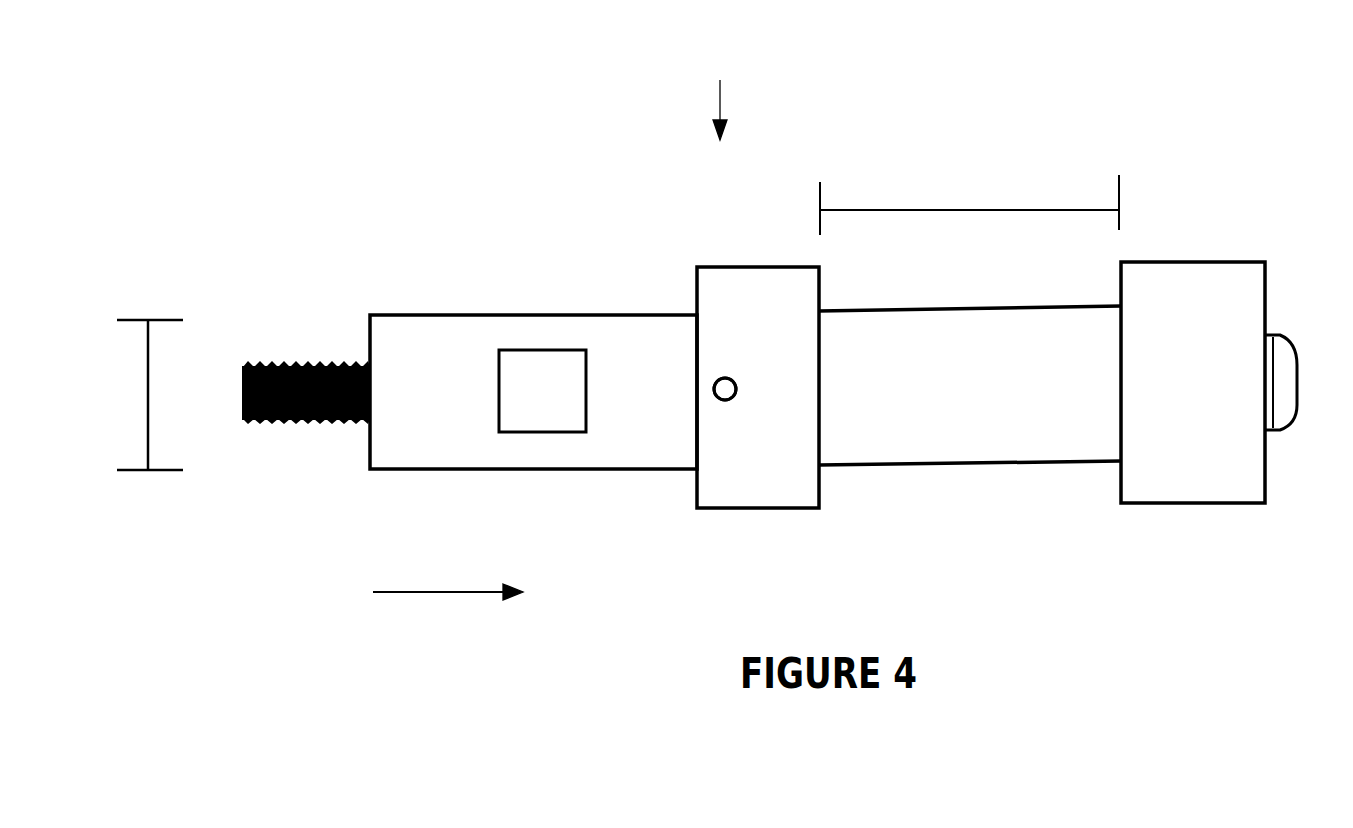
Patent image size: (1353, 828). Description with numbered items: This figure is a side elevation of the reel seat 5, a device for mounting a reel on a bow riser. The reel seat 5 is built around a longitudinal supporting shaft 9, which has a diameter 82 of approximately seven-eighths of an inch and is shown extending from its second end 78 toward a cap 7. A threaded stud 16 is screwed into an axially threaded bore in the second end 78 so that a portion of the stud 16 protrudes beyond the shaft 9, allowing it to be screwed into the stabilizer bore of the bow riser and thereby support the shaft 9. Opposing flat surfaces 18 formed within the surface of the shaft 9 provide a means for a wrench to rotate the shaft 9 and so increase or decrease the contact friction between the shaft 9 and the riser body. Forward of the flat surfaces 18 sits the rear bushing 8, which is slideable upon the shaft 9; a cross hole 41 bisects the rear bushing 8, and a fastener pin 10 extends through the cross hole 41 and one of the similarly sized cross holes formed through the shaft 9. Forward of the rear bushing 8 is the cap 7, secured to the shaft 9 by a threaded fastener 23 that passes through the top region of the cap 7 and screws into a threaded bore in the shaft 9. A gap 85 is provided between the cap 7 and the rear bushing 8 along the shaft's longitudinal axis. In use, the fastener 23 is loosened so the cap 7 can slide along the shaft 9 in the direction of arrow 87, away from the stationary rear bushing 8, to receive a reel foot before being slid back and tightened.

The reel seat 5 is at (720, 87).
The cap 7 is at (1185, 410).
The rear bushing 8 is at (745, 355).
The longitudinal supporting shaft 9 is at (955, 417).
The fastener pin 10 is at (725, 400).
The threaded stud 16 is at (272, 362).
The flat surfaces 18 is at (523, 375).
The threaded fastener 23 is at (1285, 360).
The cross hole 41 is at (715, 379).
The second end 78 is at (370, 450).
The diameter 82 is at (148, 397).
The gap 85 is at (977, 210).
The arrow 87 is at (437, 592).